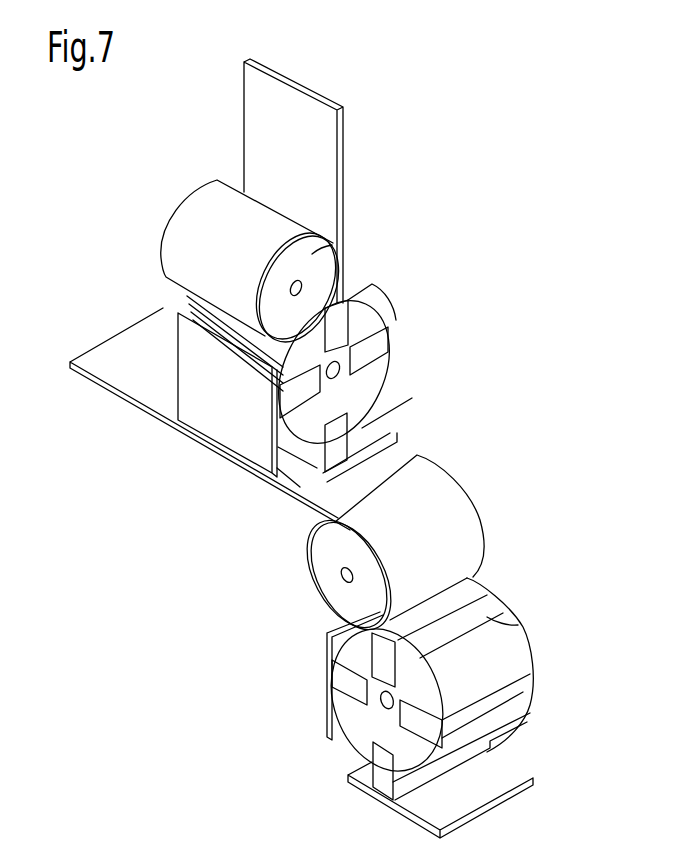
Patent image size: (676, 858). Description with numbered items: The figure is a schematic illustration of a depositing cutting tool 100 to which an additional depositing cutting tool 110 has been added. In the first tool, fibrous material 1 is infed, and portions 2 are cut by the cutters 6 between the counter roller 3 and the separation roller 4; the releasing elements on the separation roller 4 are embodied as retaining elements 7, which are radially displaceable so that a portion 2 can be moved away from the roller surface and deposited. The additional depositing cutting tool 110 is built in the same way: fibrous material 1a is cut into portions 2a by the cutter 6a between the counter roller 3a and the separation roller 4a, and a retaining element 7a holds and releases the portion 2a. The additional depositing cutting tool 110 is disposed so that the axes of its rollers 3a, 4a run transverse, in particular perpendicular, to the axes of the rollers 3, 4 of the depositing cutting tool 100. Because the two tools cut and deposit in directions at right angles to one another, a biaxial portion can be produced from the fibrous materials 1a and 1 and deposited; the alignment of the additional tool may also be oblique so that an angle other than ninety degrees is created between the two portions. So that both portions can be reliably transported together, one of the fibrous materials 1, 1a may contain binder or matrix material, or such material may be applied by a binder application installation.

The fibrous material 1a is at (345, 143).
The counter roller 3a is at (343, 237).
The cutter 6a is at (386, 308).
The additional depositing cutting tool 110 is at (383, 357).
The retaining element 7a is at (375, 347).
The separation roller 4a is at (362, 387).
The portion 2a is at (247, 428).
The fibrous material 1 is at (383, 477).
The counter roller 3 is at (327, 573).
The cutter 6 is at (530, 643).
The depositing cutting tool 100 is at (453, 689).
The separation roller 4 is at (513, 680).
The portion 2 is at (326, 715).
The retaining element 7 is at (368, 760).